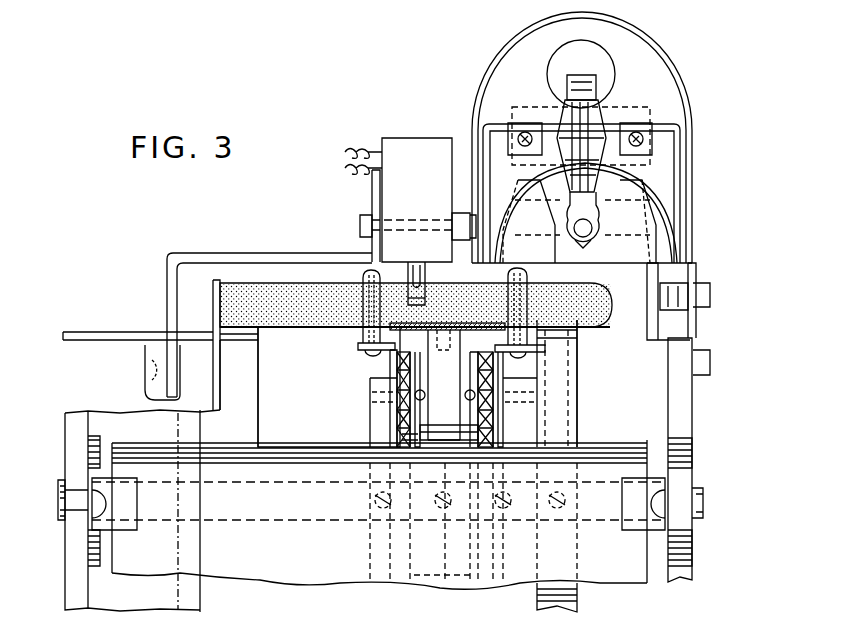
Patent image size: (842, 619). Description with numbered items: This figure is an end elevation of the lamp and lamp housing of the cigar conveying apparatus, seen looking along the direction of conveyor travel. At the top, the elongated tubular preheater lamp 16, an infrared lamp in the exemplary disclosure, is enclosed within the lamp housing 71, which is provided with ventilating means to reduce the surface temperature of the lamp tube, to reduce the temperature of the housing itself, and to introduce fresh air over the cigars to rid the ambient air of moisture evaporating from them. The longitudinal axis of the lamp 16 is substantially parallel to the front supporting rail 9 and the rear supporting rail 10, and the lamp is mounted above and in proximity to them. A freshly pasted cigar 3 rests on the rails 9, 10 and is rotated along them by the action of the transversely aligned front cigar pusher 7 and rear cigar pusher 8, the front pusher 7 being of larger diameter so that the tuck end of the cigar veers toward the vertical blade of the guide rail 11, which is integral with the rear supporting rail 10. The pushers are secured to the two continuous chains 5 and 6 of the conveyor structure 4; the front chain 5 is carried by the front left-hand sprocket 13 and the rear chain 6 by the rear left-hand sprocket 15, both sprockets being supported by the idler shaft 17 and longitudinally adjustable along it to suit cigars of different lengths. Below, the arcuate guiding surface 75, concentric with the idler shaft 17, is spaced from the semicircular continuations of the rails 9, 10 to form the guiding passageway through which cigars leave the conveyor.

The lamp housing 71 is at (665, 52).
The conveyor structure 4 is at (148, 268).
The guide rail 11 is at (213, 296).
The rear cigar pusher 8 is at (528, 292).
The preheater lamp 16 is at (591, 232).
The rear supporting rail 10 is at (258, 365).
The front cigar pusher 7 is at (363, 336).
The cigar 3 is at (590, 322).
The rear left-hand sprocket 15 is at (397, 373).
The front left-hand sprocket 13 is at (493, 373).
The front supporting rail 9 is at (577, 384).
The arcuate guiding surface 75 is at (303, 445).
The rear conveyor chain 6 is at (405, 428).
The front conveyor chain 5 is at (490, 430).
The idler shaft 17 is at (60, 495).